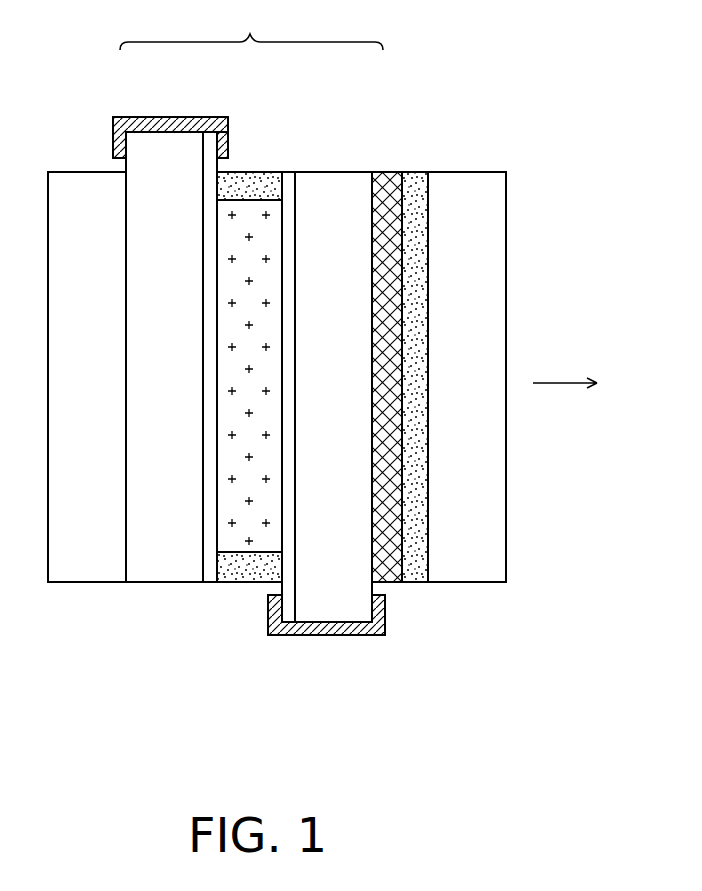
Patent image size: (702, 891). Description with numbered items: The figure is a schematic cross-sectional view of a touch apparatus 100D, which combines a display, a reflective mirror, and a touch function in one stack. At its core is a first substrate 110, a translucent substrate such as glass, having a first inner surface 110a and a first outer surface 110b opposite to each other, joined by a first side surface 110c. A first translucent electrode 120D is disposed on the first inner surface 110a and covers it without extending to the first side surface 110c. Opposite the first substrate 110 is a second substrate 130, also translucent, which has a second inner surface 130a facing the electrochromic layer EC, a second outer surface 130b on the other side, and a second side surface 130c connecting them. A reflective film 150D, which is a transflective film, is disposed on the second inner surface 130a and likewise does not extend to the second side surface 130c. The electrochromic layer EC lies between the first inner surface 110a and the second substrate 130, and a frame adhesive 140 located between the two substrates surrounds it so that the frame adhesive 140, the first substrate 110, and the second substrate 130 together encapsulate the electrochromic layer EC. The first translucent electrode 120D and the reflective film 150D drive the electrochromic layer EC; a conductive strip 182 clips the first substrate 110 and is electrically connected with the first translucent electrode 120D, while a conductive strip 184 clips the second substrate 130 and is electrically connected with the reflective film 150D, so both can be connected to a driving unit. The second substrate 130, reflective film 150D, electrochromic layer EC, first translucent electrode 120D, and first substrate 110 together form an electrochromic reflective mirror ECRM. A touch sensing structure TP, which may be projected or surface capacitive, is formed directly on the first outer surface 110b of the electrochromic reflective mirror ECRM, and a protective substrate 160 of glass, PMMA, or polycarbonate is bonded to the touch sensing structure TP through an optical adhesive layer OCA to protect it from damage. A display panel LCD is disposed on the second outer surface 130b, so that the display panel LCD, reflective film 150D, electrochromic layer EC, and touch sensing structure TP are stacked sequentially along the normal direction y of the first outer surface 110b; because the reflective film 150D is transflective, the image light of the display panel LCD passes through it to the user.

The touch apparatus 100D is at (604, 717).
The display panel LCD is at (77, 187).
The second substrate 130 is at (147, 147).
The second inner surface 130a is at (214, 538).
The second outer surface 130b is at (113, 558).
The second side surface 130c is at (160, 593).
The conductive strip 184 is at (125, 114).
The reflective film 150D is at (210, 143).
The frame adhesive 140 is at (243, 185).
The electrochromic layer EC is at (260, 213).
The first translucent electrode 120D is at (288, 183).
The first inner surface 110a is at (272, 538).
The first substrate 110 is at (332, 195).
The first outer surface 110b is at (383, 558).
The first side surface 110c is at (338, 633).
The conductive strip 182 is at (373, 635).
The touch sensing structure TP is at (383, 176).
The optical adhesive layer OCA is at (415, 183).
The protective substrate 160 is at (477, 183).
The electrochromic reflective mirror ECRM is at (251, 25).
The normal direction y is at (563, 382).